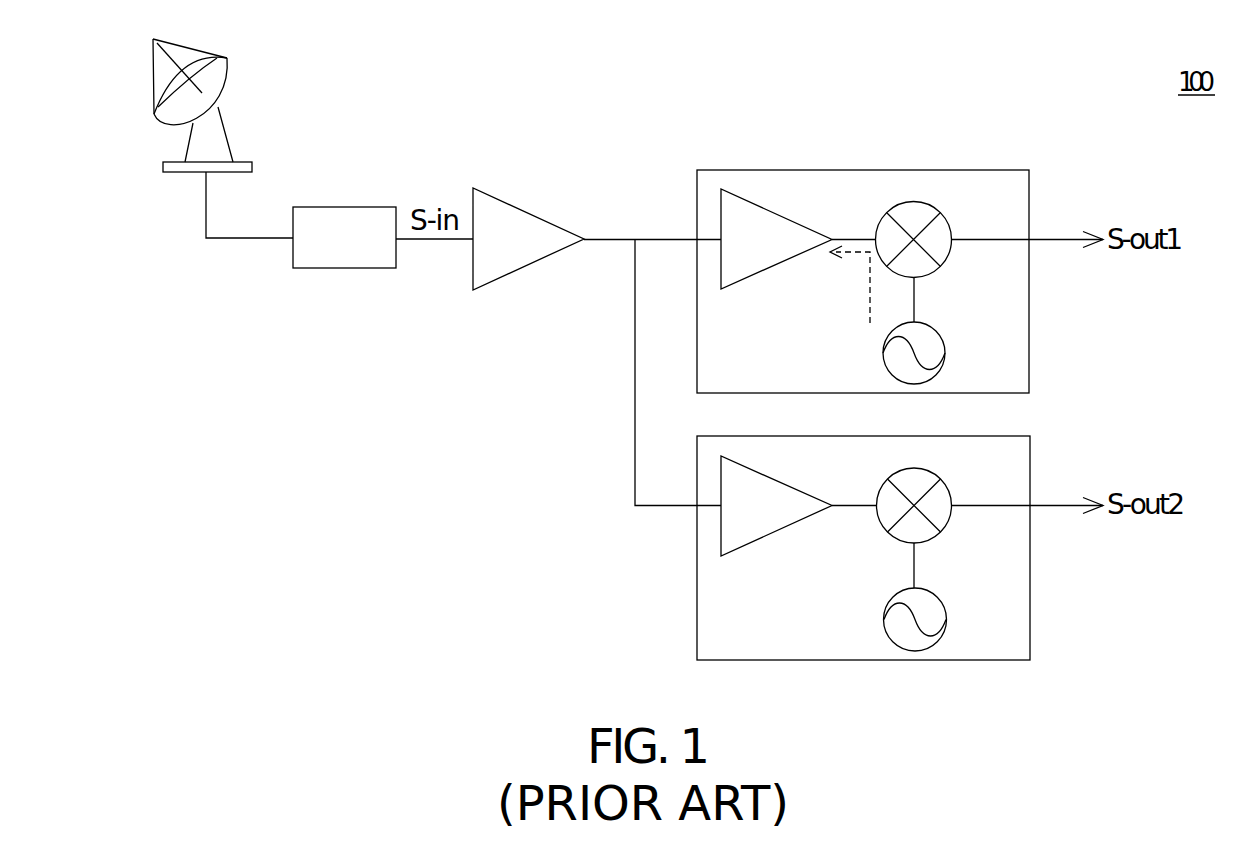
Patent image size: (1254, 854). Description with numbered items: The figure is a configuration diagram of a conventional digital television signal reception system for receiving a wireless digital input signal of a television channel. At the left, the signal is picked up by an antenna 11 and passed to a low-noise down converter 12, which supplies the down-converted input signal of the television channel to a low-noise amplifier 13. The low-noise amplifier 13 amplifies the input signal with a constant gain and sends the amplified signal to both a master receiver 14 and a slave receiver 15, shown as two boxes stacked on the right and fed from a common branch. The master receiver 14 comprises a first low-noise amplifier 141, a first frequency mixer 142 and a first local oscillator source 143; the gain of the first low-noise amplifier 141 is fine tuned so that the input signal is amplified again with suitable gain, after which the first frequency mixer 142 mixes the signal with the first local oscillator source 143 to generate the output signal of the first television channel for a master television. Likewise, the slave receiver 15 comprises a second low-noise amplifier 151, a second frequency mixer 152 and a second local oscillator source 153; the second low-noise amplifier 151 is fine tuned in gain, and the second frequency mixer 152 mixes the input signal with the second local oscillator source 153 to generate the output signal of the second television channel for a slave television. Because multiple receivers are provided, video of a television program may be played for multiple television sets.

The antenna 11 is at (215, 92).
The low-noise down converter 12 is at (344, 211).
The low-noise amplifier 13 is at (510, 218).
The master receiver 14 is at (988, 192).
The first low-noise amplifier 141 is at (748, 265).
The first frequency mixer 142 is at (927, 261).
The first local oscillator source 143 is at (903, 360).
The slave receiver 15 is at (990, 462).
The second low-noise amplifier 151 is at (750, 533).
The second frequency mixer 152 is at (930, 530).
The second local oscillator source 153 is at (903, 629).